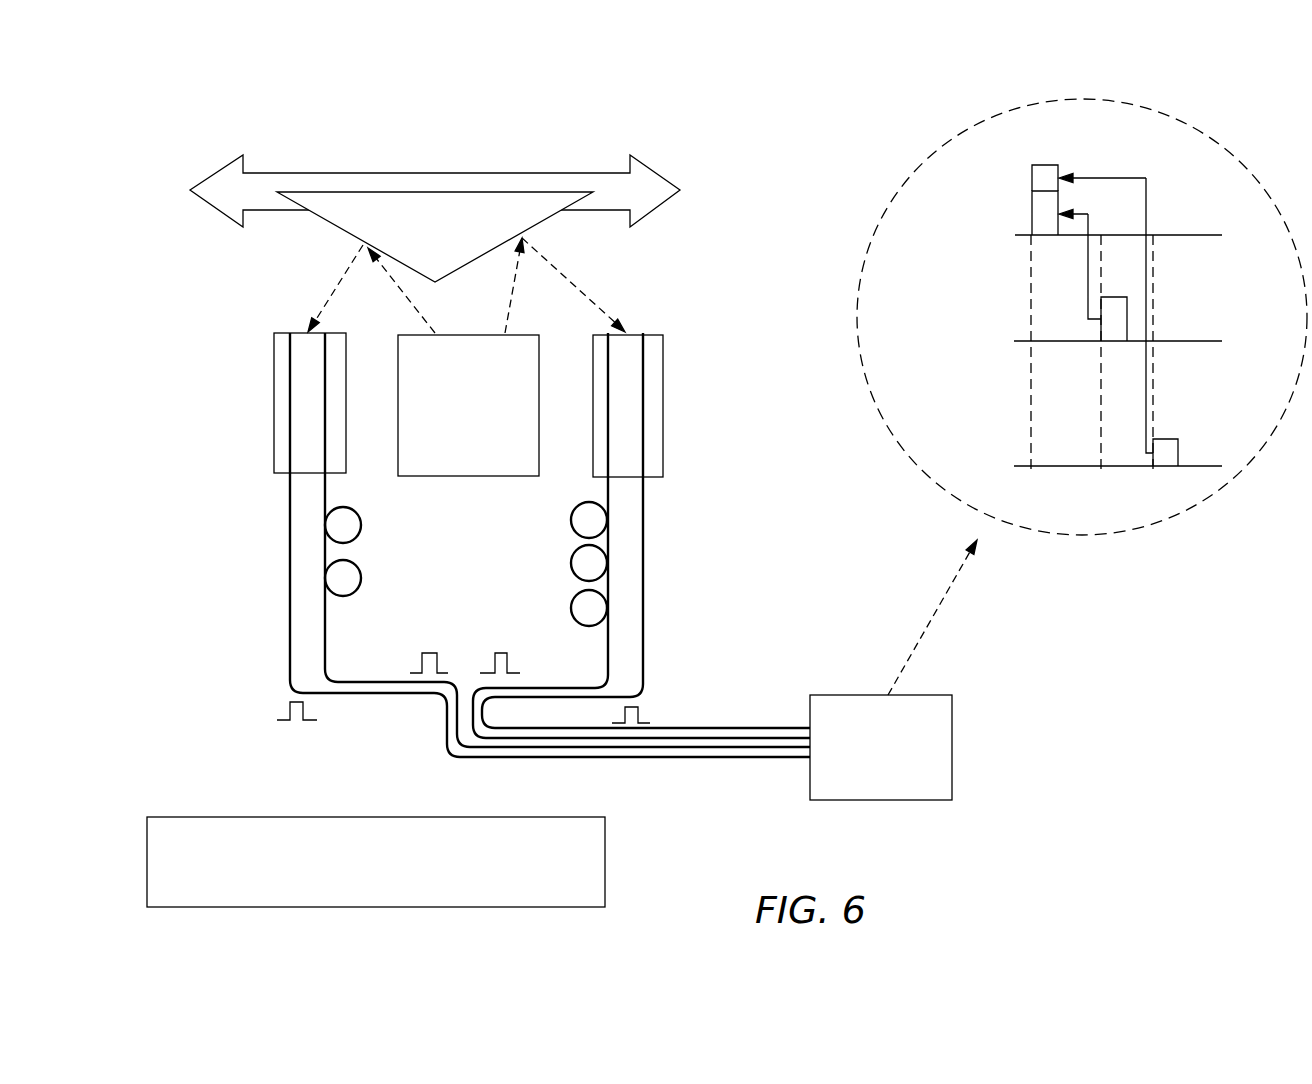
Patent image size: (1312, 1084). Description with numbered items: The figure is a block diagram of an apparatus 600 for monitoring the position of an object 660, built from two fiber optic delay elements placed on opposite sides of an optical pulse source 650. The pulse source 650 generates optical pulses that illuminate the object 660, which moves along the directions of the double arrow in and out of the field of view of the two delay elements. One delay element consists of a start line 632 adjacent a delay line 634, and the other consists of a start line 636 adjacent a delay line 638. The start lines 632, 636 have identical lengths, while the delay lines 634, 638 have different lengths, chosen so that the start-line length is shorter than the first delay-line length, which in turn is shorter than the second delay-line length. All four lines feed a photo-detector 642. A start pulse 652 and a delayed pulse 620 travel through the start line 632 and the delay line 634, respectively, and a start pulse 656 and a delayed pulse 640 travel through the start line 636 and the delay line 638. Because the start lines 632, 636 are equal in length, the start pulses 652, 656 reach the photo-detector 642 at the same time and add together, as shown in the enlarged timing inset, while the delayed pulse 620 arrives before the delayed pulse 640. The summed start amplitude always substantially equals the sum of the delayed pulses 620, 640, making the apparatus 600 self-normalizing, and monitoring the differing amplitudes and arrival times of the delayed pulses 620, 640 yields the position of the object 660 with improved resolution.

The apparatus 600 is at (755, 152).
The object 660 is at (482, 196).
The optical pulse source 650 is at (466, 477).
The start line 632 is at (290, 631).
The delay line 634 is at (328, 640).
The delay line 638 is at (606, 653).
The start line 636 is at (645, 653).
The photo-detector 642 is at (955, 748).
The delayed pulse 620 is at (432, 652).
The delayed pulse 640 is at (503, 652).
The start pulse 652 is at (285, 712).
The start pulse 656 is at (641, 711).